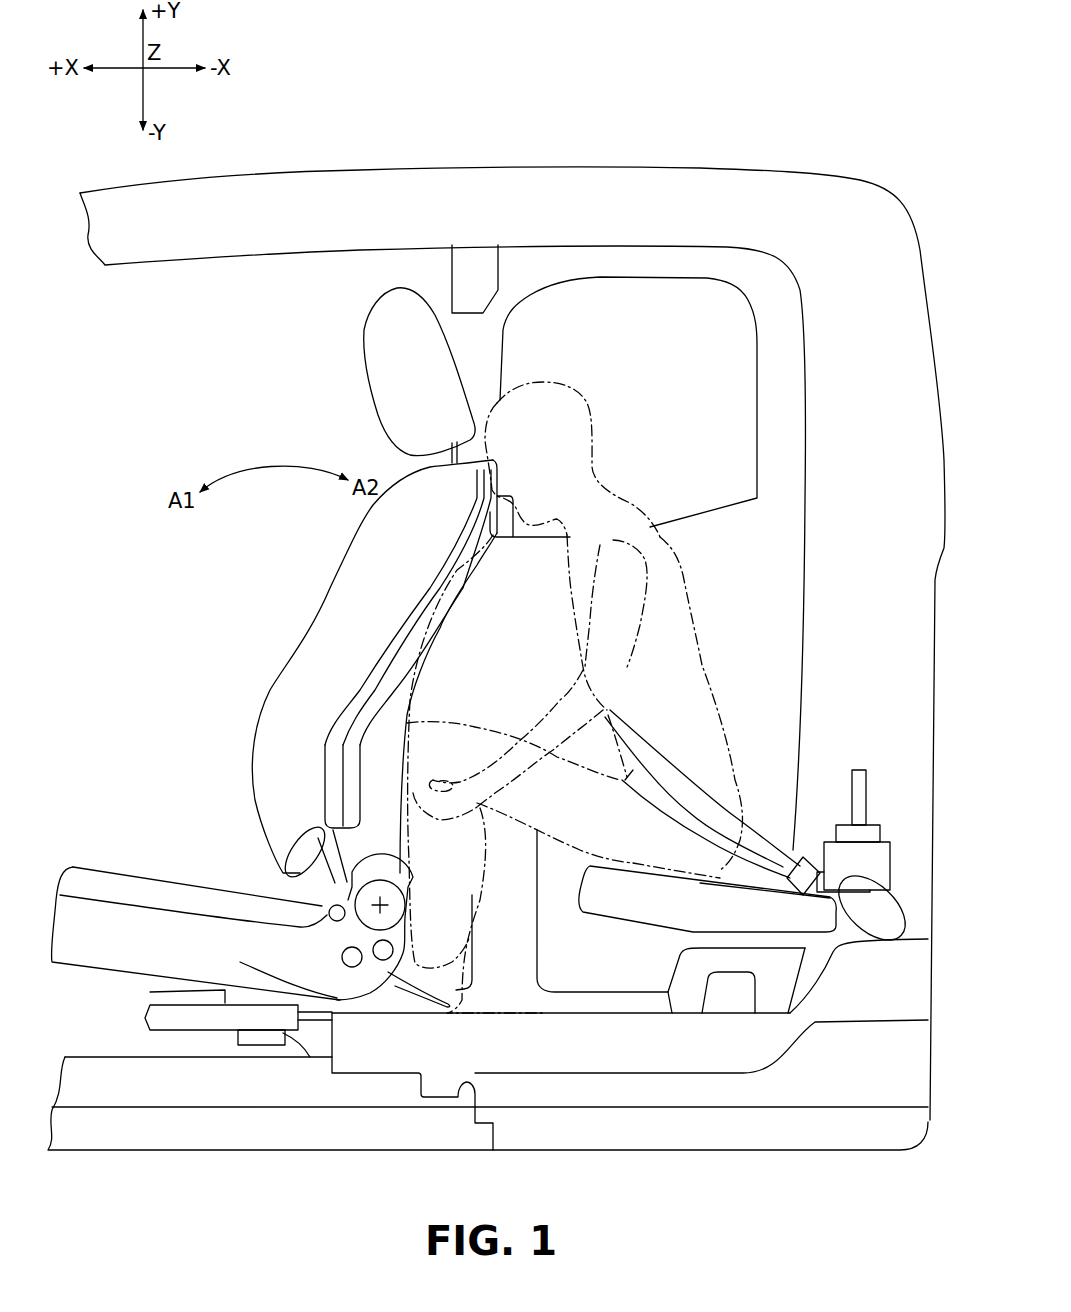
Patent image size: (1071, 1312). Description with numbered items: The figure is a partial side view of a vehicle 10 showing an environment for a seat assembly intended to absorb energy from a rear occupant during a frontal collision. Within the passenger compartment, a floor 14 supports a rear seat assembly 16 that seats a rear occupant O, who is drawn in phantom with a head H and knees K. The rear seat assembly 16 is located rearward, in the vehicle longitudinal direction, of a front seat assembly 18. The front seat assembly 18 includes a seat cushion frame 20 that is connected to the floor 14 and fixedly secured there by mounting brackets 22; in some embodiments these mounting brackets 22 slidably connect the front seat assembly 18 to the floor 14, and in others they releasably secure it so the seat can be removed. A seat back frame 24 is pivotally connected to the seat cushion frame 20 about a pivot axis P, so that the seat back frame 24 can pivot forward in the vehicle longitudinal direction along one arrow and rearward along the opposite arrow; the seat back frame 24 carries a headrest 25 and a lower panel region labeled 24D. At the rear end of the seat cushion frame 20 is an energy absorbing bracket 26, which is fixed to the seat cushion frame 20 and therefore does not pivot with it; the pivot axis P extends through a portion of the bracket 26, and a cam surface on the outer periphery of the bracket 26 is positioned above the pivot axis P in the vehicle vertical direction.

The vehicle 10 is at (588, 153).
The floor 14 is at (92, 1057).
The rear seat assembly 16 is at (766, 770).
The front seat assembly 18 is at (153, 655).
The seat cushion frame 20 is at (147, 873).
The mounting brackets 22 is at (168, 992).
The seat back frame 24 is at (292, 613).
The seat back deployable panel 24D is at (383, 677).
The headrest 25 is at (376, 353).
The energy absorbing bracket 26 is at (360, 932).
The pivot axis P is at (322, 908).
The rear occupant O is at (675, 551).
The head H is at (488, 403).
The knees K is at (428, 718).